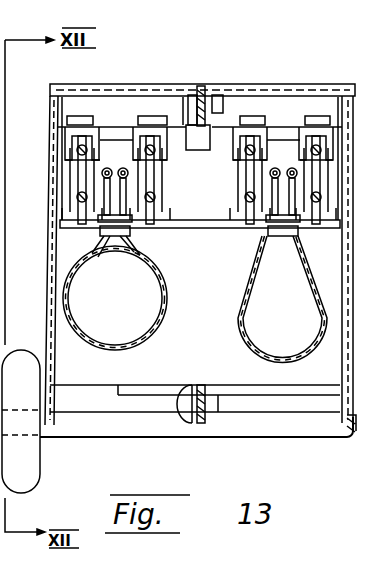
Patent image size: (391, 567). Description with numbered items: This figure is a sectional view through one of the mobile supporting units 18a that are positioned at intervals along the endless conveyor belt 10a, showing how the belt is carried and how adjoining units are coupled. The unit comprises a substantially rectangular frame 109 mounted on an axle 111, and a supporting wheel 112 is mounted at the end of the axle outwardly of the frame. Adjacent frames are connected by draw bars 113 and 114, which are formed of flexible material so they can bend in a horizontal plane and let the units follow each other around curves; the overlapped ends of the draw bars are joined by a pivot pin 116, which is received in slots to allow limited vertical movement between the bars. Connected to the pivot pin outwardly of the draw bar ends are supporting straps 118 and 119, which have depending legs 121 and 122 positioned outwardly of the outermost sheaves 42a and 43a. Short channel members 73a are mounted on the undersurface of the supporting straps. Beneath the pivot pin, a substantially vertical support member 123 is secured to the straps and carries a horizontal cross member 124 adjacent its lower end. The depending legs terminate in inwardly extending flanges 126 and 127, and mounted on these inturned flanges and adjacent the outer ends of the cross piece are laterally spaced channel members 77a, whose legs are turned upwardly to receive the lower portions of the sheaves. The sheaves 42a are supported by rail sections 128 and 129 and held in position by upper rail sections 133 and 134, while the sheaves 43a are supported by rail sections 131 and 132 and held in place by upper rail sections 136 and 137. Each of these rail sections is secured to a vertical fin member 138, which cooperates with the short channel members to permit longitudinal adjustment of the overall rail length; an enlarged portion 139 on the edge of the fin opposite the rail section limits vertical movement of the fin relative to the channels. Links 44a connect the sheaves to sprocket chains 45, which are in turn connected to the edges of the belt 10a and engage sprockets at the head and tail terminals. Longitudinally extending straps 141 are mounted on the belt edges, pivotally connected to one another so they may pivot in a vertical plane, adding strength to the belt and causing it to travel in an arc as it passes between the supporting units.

The rectangular frame 109 is at (337, 88).
The draw bar 113 is at (205, 85).
The pivot pin 116 is at (188, 103).
The draw bar 114 is at (207, 88).
The mobile supporting unit 18a is at (286, 77).
The supporting strap 119 is at (290, 125).
The supporting strap 118 is at (130, 123).
The enlarged portion 139 is at (88, 125).
The vertical fin member 138 is at (75, 130).
The upper rail section 136 is at (160, 131).
The upper rail section 134 is at (238, 131).
The upper rail section 137 is at (325, 132).
The short channel member 73a is at (120, 132).
The channel member 77a is at (355, 192).
The sheave 42a is at (248, 178).
The sheave 43a is at (160, 181).
The rail section 131 is at (155, 203).
The rail section 129 is at (245, 195).
The upper rail section 133 is at (77, 148).
The depending leg 121 is at (58, 210).
The rail section 128 is at (62, 210).
The depending leg 122 is at (340, 218).
The inwardly extending flange 127 is at (345, 238).
The inwardly extending flange 126 is at (60, 228).
The horizontal cross member 124 is at (193, 222).
The vertical support member 123 is at (203, 210).
The endless conveyor belt 10a is at (253, 282).
The link 44a is at (108, 240).
The sprocket chain 45 is at (88, 260).
The longitudinally extending strap 141 is at (140, 250).
The rail section 132 is at (303, 245).
The axle 111 is at (149, 435).
The supporting wheel 112 is at (22, 352).